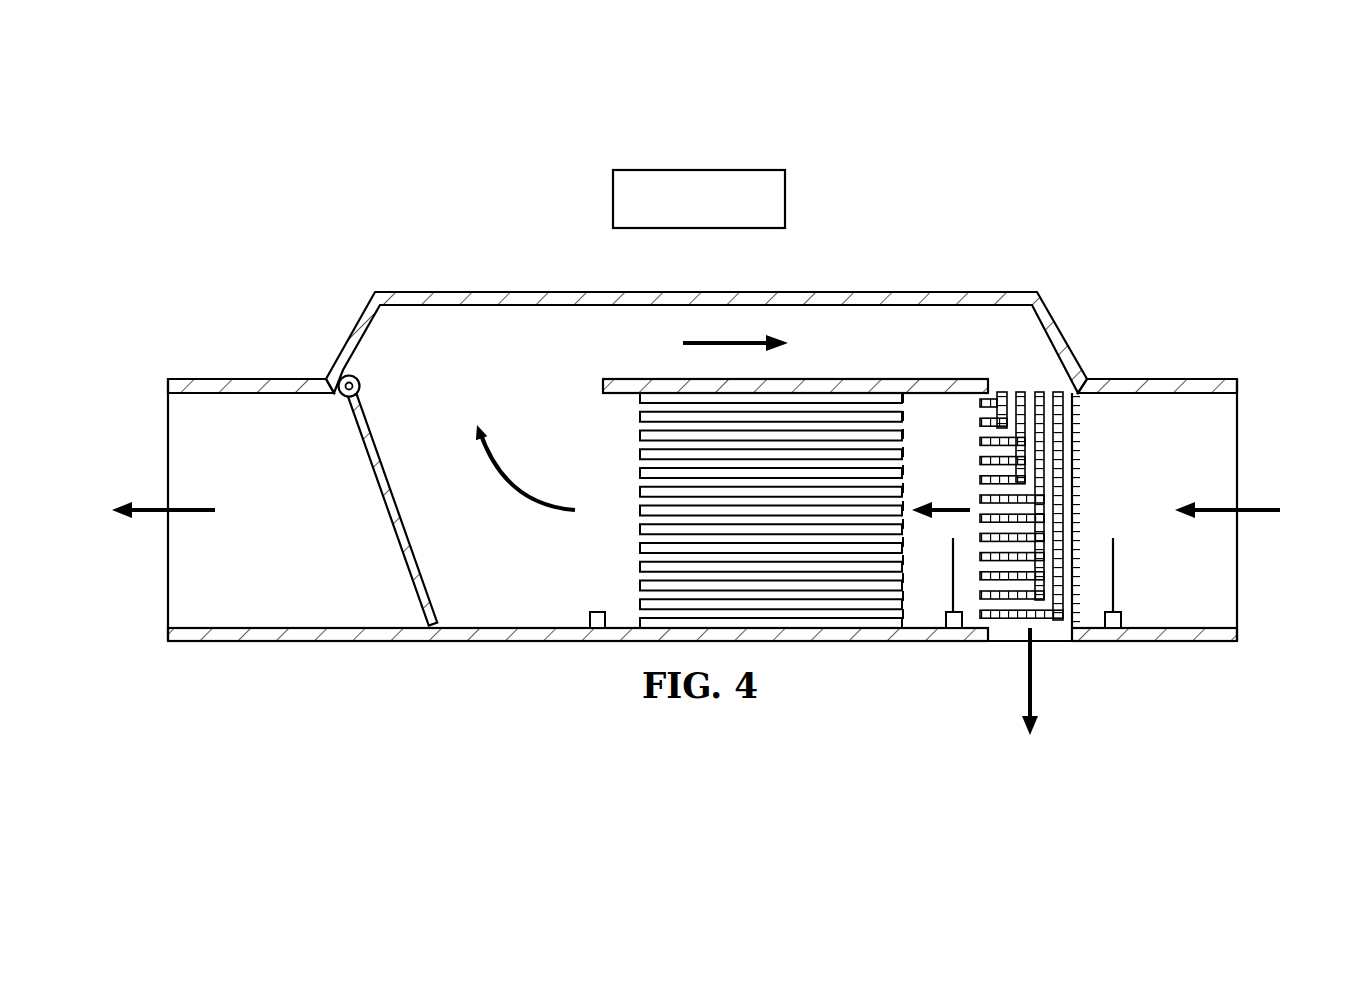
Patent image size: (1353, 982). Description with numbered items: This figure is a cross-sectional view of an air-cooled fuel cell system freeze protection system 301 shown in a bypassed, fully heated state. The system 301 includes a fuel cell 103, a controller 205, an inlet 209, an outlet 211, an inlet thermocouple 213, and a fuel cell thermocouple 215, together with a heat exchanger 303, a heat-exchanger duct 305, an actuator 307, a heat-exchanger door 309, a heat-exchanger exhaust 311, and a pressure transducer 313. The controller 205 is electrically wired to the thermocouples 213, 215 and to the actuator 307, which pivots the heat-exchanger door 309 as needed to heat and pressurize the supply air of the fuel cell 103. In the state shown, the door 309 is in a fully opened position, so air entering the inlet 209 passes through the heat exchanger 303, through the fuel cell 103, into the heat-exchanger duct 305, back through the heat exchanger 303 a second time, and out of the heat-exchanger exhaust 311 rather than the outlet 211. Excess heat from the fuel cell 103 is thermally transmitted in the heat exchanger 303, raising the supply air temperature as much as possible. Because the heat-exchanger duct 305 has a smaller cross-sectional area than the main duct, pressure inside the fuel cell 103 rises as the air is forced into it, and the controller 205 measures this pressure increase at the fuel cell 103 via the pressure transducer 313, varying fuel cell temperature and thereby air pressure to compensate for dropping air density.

The air-cooled fuel cell system freeze protection system 301 is at (244, 120).
The controller 205 is at (613, 198).
The heat-exchanger duct 305 is at (437, 300).
The actuator 307 is at (361, 386).
The heat-exchanger door 309 is at (385, 498).
The fuel cell 103 is at (640, 490).
The heat exchanger 303 is at (1078, 442).
The pressure transducer 313 is at (590, 620).
The fuel cell thermocouple 215 is at (945, 617).
The inlet thermocouple 213 is at (1122, 618).
The heat-exchanger exhaust 311 is at (1053, 632).
The outlet 211 is at (140, 441).
The inlet 209 is at (1268, 590).